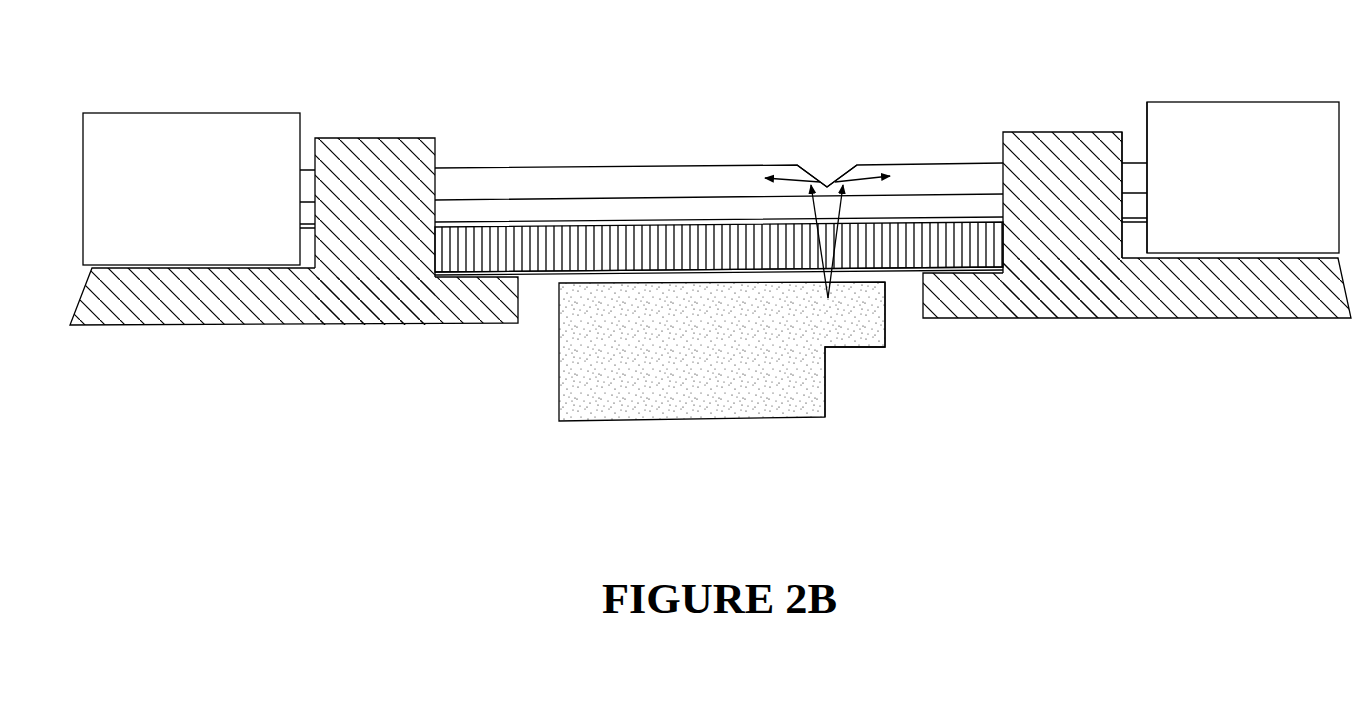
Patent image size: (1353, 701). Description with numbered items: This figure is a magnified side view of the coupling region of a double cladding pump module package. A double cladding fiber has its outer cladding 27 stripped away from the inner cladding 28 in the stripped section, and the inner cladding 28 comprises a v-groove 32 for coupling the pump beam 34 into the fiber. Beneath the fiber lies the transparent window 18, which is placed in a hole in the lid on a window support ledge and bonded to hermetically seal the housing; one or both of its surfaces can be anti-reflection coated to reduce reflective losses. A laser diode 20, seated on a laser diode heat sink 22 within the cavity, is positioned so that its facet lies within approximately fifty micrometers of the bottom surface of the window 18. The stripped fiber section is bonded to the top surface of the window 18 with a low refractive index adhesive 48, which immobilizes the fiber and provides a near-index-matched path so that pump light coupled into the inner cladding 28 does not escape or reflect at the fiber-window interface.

The transparent substrate/window 18 is at (542, 276).
The laser diode 20 is at (865, 340).
The laser diode heat sink 22 is at (690, 422).
The outer cladding 27 is at (1137, 121).
The inner cladding 28 is at (483, 187).
The v-groove 32 is at (834, 157).
The pump beam 34 is at (792, 172).
The low refractive index adhesive 48 is at (522, 235).